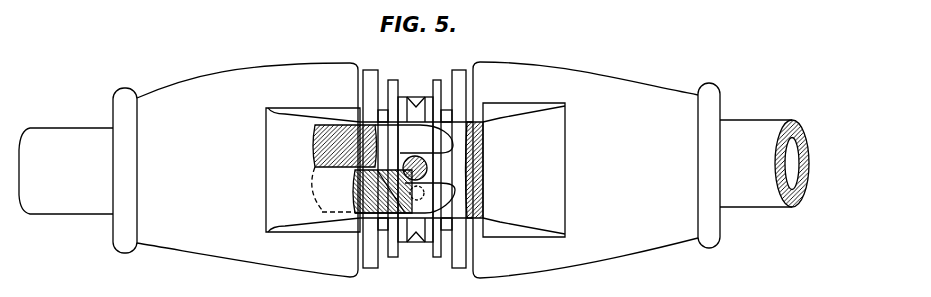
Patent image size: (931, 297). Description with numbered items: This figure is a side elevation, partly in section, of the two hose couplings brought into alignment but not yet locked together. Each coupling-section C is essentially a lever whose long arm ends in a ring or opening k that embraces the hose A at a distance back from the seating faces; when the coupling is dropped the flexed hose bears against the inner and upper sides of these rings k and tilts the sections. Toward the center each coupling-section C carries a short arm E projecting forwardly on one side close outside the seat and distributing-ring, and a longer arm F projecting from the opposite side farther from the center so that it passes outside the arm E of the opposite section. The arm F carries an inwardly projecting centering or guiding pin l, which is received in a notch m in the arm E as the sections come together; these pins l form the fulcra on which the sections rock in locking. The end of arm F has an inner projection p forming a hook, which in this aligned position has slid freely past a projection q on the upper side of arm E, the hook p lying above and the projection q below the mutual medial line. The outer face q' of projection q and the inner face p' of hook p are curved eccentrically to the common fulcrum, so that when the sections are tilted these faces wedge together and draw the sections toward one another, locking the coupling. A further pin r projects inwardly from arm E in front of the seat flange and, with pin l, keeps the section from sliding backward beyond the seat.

The shaft A is at (414, 167).
The rings or openings k is at (416, 168).
The coupling-section C is at (417, 170).
The short arm E is at (313, 170).
The longer arm F is at (516, 170).
The projection (hook) p is at (333, 146).
The inner face of projection p p' is at (389, 140).
The projection q is at (382, 183).
The outer face of projection q q' is at (334, 189).
The centering or guiding pin l is at (412, 157).
The notch m is at (426, 139).
The pin r is at (420, 193).